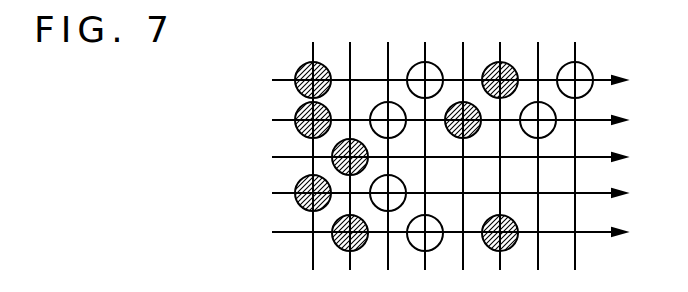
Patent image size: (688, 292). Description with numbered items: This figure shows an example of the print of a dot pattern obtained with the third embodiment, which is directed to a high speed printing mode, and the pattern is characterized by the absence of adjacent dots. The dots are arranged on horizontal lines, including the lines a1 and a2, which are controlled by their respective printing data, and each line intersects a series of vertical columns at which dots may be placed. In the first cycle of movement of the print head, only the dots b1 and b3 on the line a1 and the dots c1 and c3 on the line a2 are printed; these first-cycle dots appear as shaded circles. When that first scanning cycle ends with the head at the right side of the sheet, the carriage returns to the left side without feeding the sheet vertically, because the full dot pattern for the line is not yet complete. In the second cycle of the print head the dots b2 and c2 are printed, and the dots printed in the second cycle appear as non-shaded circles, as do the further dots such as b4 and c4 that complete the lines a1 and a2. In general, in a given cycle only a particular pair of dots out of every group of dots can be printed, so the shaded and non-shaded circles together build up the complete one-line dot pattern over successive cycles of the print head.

The line a1 is at (422, 80).
The line a2 is at (422, 120).
The dot b1 is at (300, 66).
The dot b2 is at (420, 63).
The dot b3 is at (510, 63).
The dot b4 is at (591, 68).
The dot c1 is at (298, 132).
The dot c2 is at (380, 102).
The dot c3 is at (470, 137).
The dot c4 is at (546, 137).